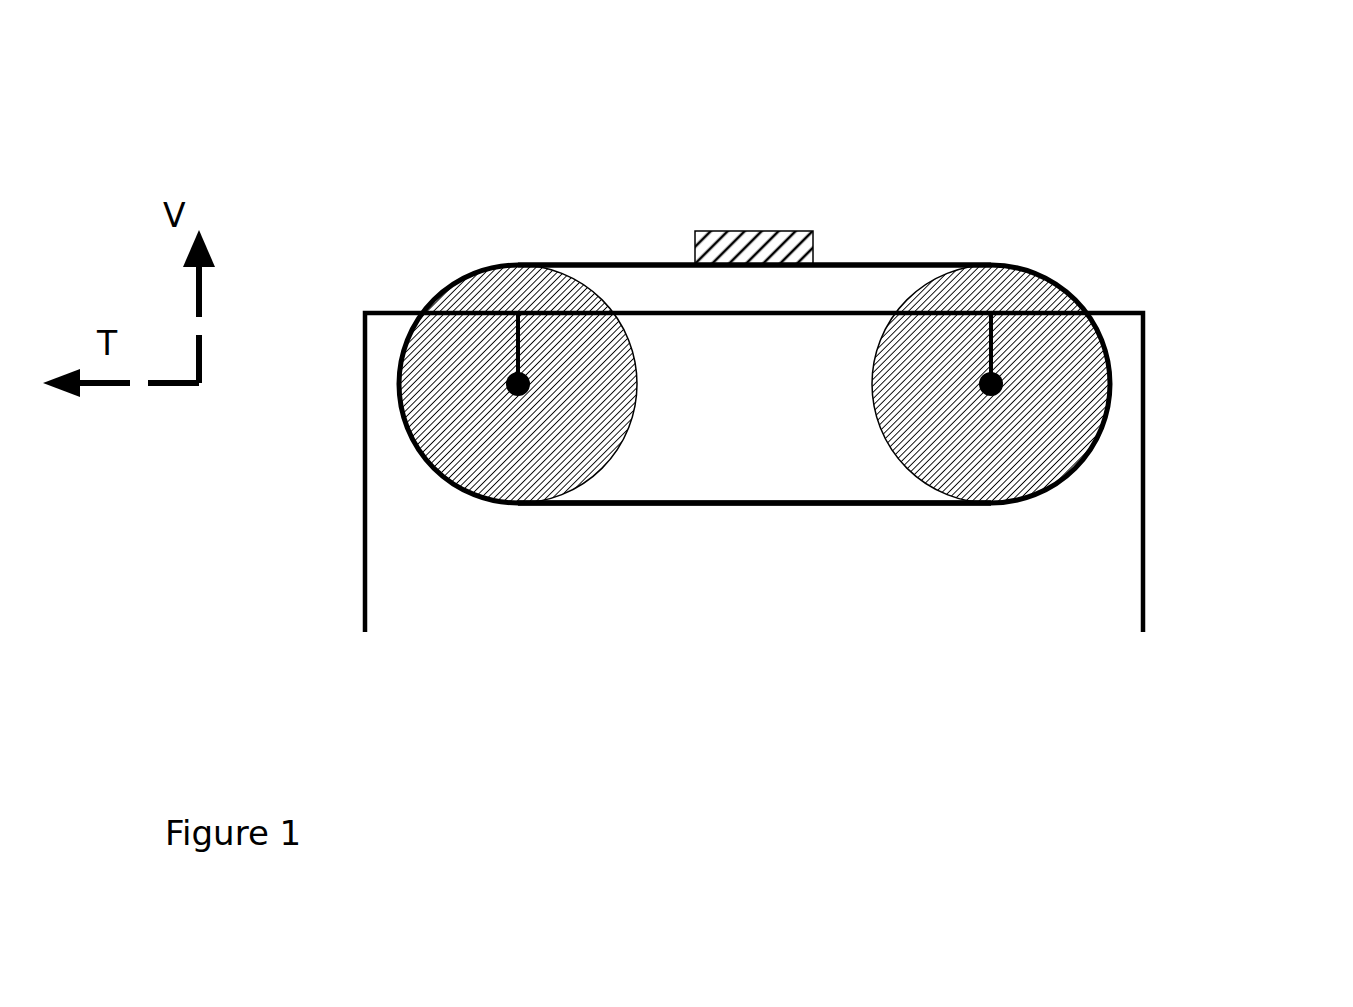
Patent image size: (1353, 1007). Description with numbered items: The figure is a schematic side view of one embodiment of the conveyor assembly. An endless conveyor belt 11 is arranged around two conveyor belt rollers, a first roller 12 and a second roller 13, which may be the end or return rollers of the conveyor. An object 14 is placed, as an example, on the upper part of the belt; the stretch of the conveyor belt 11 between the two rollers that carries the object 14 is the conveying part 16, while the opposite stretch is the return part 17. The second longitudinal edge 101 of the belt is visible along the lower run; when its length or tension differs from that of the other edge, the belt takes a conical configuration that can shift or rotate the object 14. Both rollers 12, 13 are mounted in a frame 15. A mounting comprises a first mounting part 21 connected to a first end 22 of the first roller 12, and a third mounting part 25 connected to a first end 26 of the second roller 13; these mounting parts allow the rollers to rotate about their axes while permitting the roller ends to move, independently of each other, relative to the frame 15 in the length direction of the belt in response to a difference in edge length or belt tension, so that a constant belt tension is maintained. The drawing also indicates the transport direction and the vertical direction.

The conveyor belt 11 is at (753, 513).
The first roller 12 is at (520, 455).
The second roller 13 is at (1040, 453).
The object 14 is at (797, 212).
The frame 15 is at (377, 632).
The conveying part 16 is at (620, 265).
The return part 17 is at (882, 507).
The first mounting part 21 is at (510, 317).
The first end of the first roller 22 is at (510, 388).
The third mounting part 25 is at (992, 338).
The first end of the second roller 26 is at (995, 383).
The second longitudinal edge 101 is at (705, 507).